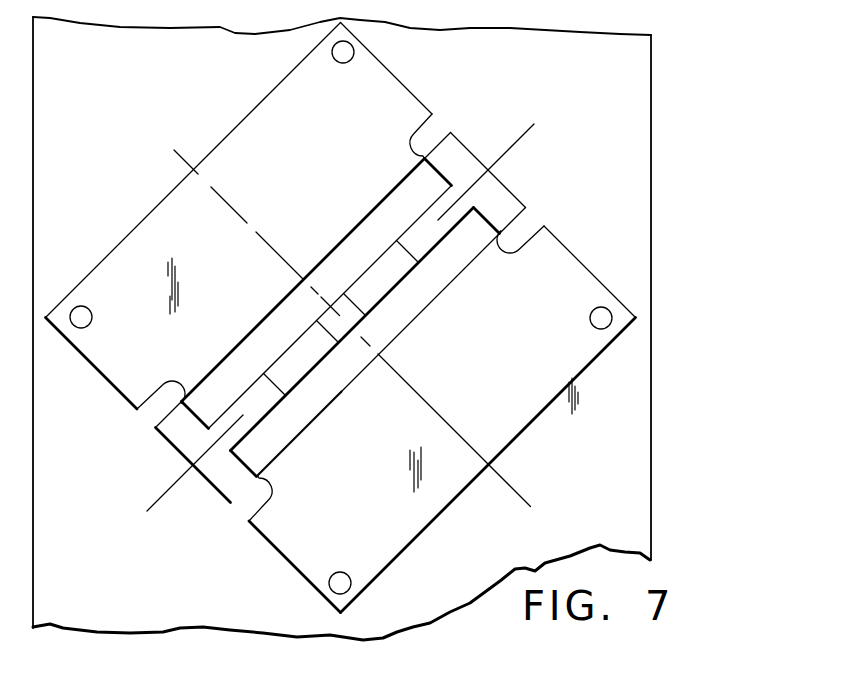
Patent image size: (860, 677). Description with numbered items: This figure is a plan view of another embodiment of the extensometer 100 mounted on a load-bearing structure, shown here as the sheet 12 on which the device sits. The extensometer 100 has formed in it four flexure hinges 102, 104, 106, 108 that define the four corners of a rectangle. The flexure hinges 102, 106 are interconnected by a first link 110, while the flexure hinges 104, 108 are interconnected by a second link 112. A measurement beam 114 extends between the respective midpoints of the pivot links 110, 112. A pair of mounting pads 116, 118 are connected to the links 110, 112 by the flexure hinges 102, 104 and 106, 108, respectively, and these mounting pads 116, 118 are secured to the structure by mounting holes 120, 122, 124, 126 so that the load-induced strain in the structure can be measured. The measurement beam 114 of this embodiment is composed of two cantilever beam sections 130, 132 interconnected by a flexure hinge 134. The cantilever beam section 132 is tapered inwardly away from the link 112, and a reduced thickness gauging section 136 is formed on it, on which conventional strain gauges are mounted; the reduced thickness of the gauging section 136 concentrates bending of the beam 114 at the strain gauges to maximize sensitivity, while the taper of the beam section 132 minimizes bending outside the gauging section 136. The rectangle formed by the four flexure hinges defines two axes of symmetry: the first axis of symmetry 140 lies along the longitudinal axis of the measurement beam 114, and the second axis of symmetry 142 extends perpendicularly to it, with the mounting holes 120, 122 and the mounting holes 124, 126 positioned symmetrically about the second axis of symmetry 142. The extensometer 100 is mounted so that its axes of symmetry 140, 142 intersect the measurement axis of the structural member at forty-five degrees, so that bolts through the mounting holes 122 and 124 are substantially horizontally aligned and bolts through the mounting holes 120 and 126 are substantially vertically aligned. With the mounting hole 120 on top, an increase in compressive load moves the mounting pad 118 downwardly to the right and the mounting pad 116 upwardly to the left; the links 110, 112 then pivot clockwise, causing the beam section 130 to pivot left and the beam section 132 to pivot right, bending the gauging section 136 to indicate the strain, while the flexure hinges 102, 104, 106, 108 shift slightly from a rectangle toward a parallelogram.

The sheet 12 is at (648, 67).
The extensometer 100 is at (226, 126).
The flexure hinge 102 is at (421, 154).
The flexure hinge 104 is at (185, 400).
The flexure hinge 106 is at (500, 240).
The flexure hinge 108 is at (262, 482).
The first link 110 is at (504, 198).
The second link 112 is at (222, 482).
The measurement beam 114 is at (305, 387).
The mounting pad 116 is at (296, 197).
The mounting pad 118 is at (504, 385).
The mounting hole 120 is at (348, 60).
The mounting hole 122 is at (86, 317).
The mounting hole 124 is at (602, 318).
The mounting hole 126 is at (340, 582).
The cantilever beam section 130 is at (421, 267).
The cantilever beam section 132 is at (283, 417).
The flexure hinge 134 is at (345, 310).
The gauging section 136 is at (303, 356).
The first axis of symmetry 140 is at (505, 153).
The second axis of symmetry 142 is at (510, 493).